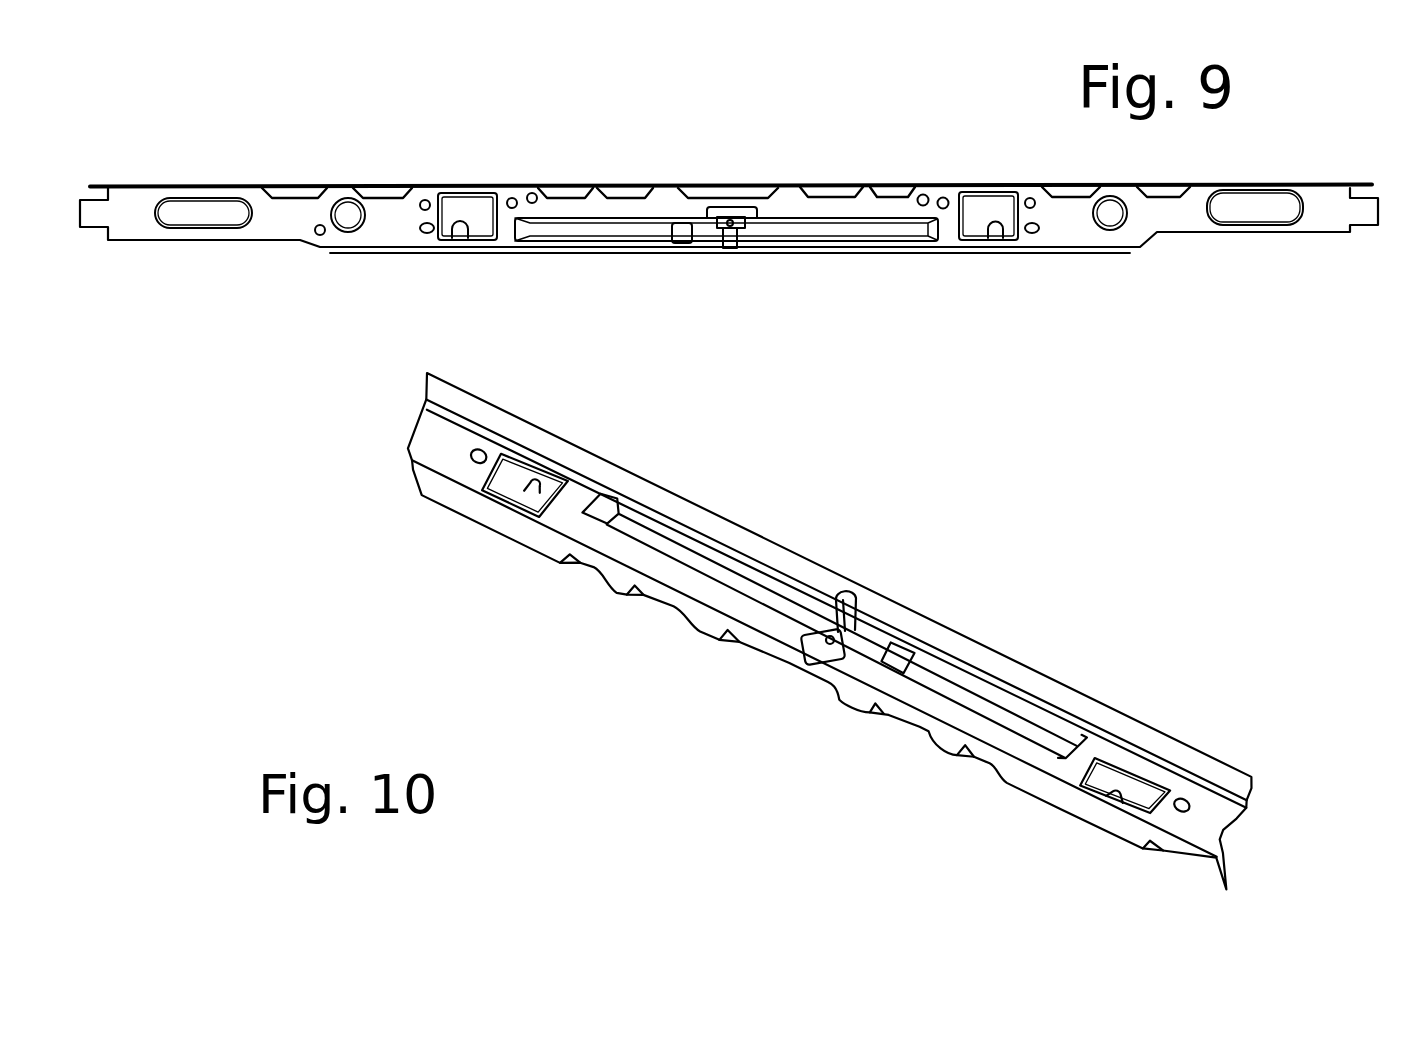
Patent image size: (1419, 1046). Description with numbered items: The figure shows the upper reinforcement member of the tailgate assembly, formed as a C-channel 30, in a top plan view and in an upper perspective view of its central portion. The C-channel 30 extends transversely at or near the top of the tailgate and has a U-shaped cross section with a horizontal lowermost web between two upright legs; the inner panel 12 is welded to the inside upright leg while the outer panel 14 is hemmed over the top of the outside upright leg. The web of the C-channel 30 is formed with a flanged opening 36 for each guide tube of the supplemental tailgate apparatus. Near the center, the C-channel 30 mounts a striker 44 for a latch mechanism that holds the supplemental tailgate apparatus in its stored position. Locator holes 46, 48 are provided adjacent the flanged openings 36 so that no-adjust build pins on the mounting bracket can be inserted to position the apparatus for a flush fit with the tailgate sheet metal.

In FIG. 9, the C-channel 30 is at (463, 140).
In FIG. 10, the C-channel 30 is at (1033, 680).
In FIG. 9, the inner panel 12 is at (727, 160).
In FIG. 10, the inner panel 12 is at (682, 661).
In FIG. 9, the outer panel 14 is at (666, 290).
In FIG. 10, the outer panel 14 is at (828, 530).
In FIG. 9, the flanged opening 36 is at (453, 236).
In FIG. 10, the flanged opening 36 is at (567, 485).
In FIG. 9, the striker 44 is at (748, 240).
In FIG. 10, the striker 44 is at (862, 607).
In FIG. 9, the locator hole 46 is at (421, 233).
In FIG. 10, the locator hole 46 is at (1192, 803).
In FIG. 9, the locator hole 48 is at (1040, 231).
In FIG. 10, the locator hole 48 is at (489, 448).